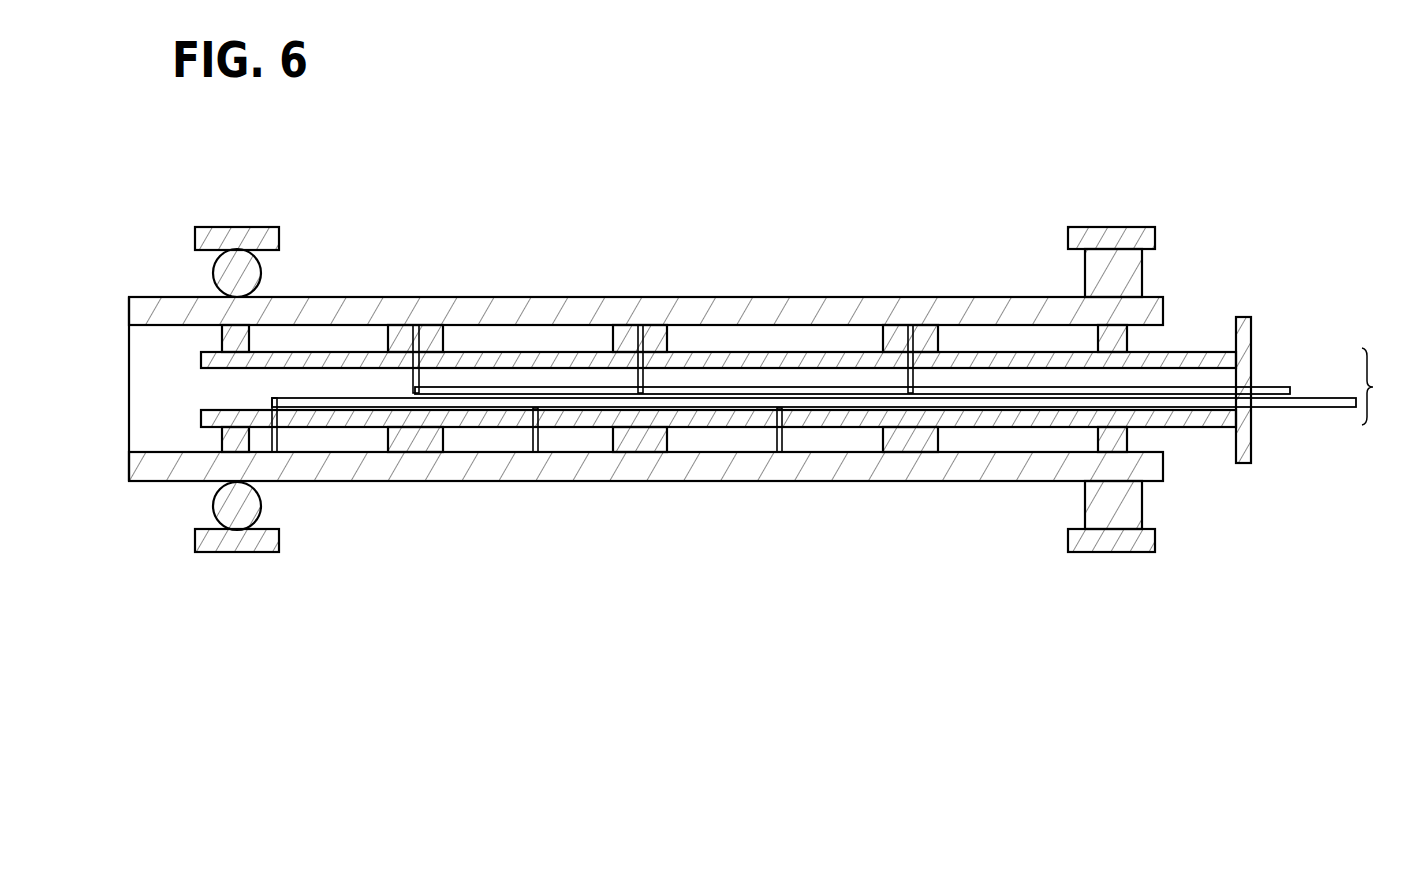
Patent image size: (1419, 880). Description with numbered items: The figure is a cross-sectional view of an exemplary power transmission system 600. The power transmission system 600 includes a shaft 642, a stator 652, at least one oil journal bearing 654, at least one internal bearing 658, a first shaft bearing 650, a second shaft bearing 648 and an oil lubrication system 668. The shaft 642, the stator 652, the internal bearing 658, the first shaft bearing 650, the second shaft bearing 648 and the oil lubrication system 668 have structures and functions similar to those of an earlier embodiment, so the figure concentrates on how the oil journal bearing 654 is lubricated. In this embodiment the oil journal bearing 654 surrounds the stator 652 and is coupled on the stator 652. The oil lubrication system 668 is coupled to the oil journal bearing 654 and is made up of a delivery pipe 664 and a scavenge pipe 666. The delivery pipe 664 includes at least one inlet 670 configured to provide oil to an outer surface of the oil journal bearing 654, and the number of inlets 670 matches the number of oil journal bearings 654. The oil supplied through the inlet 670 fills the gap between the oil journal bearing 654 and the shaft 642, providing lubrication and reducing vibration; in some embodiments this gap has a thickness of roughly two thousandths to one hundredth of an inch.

The power transmission system 600 is at (988, 165).
The shaft 642 is at (709, 297).
The second shaft bearing 648 is at (1142, 277).
The first shaft bearing 650 is at (262, 270).
The stator 652 is at (1182, 350).
The oil journal bearing 654 is at (443, 337).
The internal bearing 658 is at (220, 437).
The delivery pipe 664 is at (1272, 387).
The scavenge pipe 666 is at (1290, 410).
The oil lubrication system 668 is at (1389, 386).
The inlet 670 is at (412, 393).